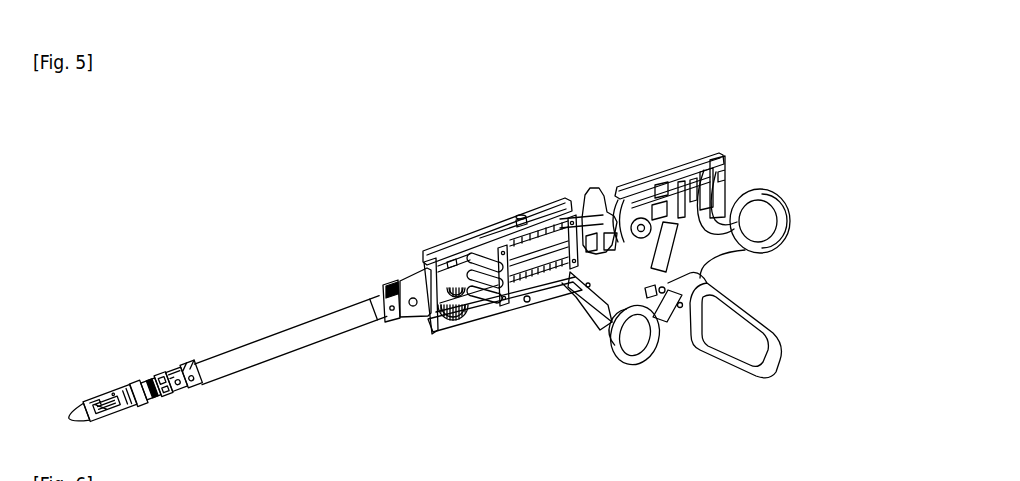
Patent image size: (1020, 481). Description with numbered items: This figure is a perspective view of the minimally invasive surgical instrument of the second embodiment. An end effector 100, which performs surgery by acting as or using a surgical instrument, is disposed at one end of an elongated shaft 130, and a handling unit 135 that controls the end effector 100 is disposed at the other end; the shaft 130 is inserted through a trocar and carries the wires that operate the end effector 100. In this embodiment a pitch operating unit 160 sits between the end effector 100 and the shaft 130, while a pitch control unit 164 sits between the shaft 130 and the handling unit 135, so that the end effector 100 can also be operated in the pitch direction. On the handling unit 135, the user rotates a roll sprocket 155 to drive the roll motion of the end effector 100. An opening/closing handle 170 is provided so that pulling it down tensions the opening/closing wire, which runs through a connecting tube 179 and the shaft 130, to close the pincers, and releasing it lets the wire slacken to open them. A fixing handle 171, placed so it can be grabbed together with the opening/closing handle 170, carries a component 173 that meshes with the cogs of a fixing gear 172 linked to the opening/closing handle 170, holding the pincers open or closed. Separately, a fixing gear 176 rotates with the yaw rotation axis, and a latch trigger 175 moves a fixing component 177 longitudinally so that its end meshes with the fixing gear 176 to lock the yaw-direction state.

The end effector 100 is at (106, 368).
The shaft 130 is at (293, 355).
The handling unit 135 is at (485, 201).
The roll sprocket 155 is at (584, 188).
The pitch operating unit 160 is at (158, 350).
The pitch control unit 164 is at (376, 272).
The opening/closing handle 170 is at (756, 190).
The fixing handle 171 is at (643, 363).
The fixing gear 172 is at (697, 282).
The component 173 is at (620, 320).
The latch trigger 175 is at (598, 315).
The fixing gear 176 is at (460, 326).
The fixing component 177 is at (497, 312).
The connecting tube 179 is at (647, 172).